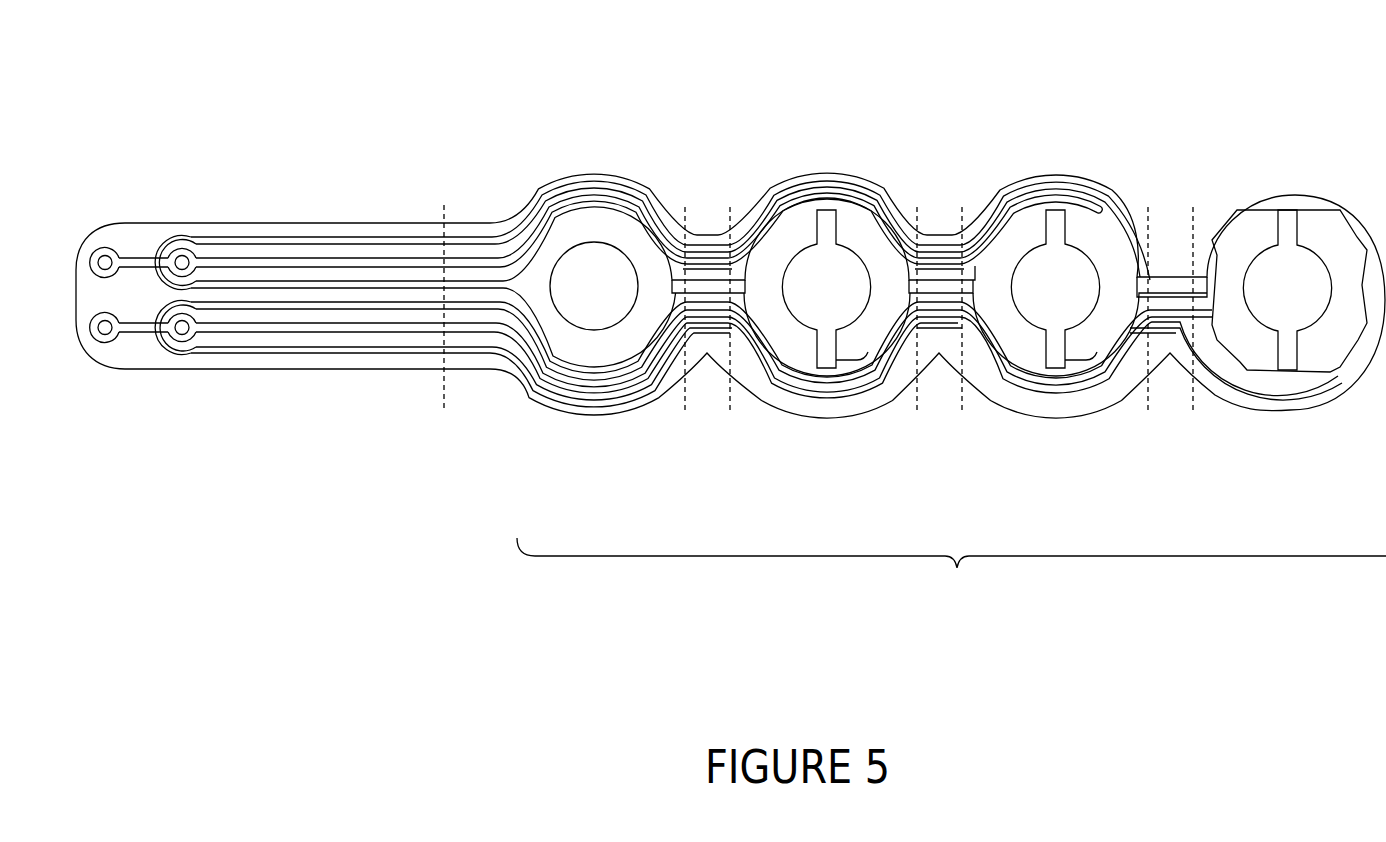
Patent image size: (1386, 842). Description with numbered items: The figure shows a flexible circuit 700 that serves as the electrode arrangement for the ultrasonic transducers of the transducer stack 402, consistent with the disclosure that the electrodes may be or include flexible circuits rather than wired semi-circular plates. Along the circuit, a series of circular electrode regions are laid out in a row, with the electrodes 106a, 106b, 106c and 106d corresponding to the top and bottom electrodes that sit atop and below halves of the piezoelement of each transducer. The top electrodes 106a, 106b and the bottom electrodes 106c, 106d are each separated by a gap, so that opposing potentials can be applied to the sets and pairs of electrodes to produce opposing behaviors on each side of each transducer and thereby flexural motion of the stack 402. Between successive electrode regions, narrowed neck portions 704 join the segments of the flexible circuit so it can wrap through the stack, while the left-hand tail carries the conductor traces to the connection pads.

The flexible circuit assembly 700 is at (910, 42).
The electrode 106a is at (806, 236).
The electrode 106b is at (853, 238).
The electrode 106c is at (1108, 257).
The electrode 106d is at (1022, 248).
The neck portion 704 is at (707, 366).
The transducer stack 402 is at (951, 574).